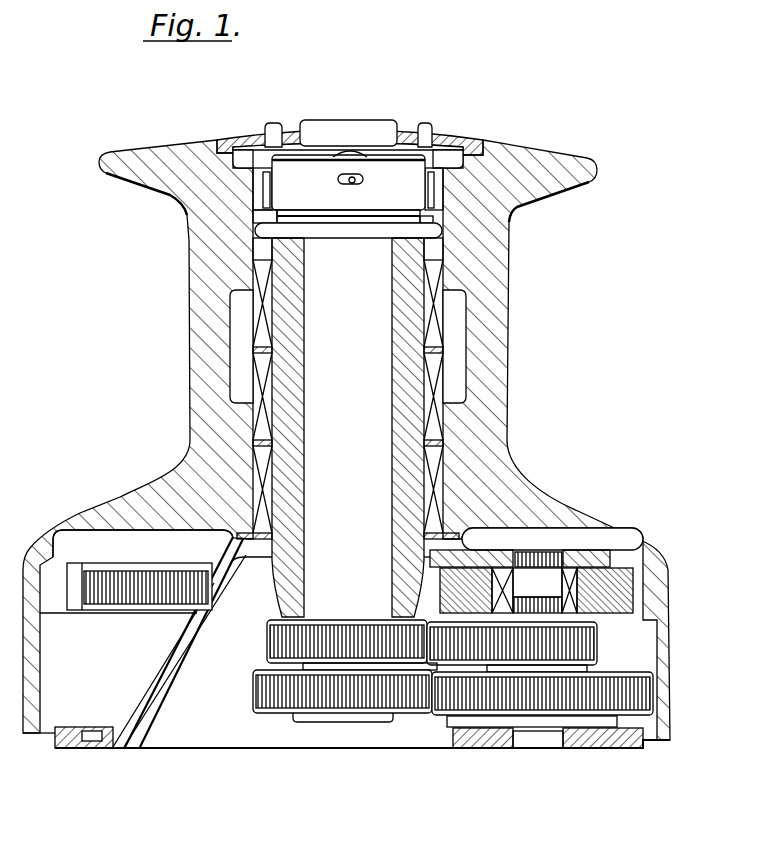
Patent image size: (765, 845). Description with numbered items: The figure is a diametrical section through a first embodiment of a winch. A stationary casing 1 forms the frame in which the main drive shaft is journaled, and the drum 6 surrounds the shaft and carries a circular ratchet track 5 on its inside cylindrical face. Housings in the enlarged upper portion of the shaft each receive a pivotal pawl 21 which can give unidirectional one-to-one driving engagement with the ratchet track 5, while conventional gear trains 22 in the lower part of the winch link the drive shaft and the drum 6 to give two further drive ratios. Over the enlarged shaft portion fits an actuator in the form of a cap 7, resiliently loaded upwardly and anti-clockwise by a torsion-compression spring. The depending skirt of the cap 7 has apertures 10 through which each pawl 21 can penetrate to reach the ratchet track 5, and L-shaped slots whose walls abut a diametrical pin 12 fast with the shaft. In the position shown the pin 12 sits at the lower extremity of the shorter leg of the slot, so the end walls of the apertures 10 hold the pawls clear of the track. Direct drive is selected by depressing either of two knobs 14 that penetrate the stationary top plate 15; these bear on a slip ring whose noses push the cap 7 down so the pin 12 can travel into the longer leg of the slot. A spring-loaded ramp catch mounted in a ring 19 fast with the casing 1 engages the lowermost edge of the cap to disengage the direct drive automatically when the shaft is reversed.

The stationary casing 1 is at (410, 393).
The circular ratchet track 5 is at (257, 187).
The drum 6 is at (567, 160).
The cap 7 is at (381, 191).
The apertures 10 is at (273, 180).
The diametrical pin 12 is at (352, 184).
The knobs 14 is at (432, 130).
The stationary top plate 15 is at (467, 140).
The ring 19 is at (435, 237).
The pivotal pawl 21 is at (262, 195).
The gear trains 22 is at (430, 696).